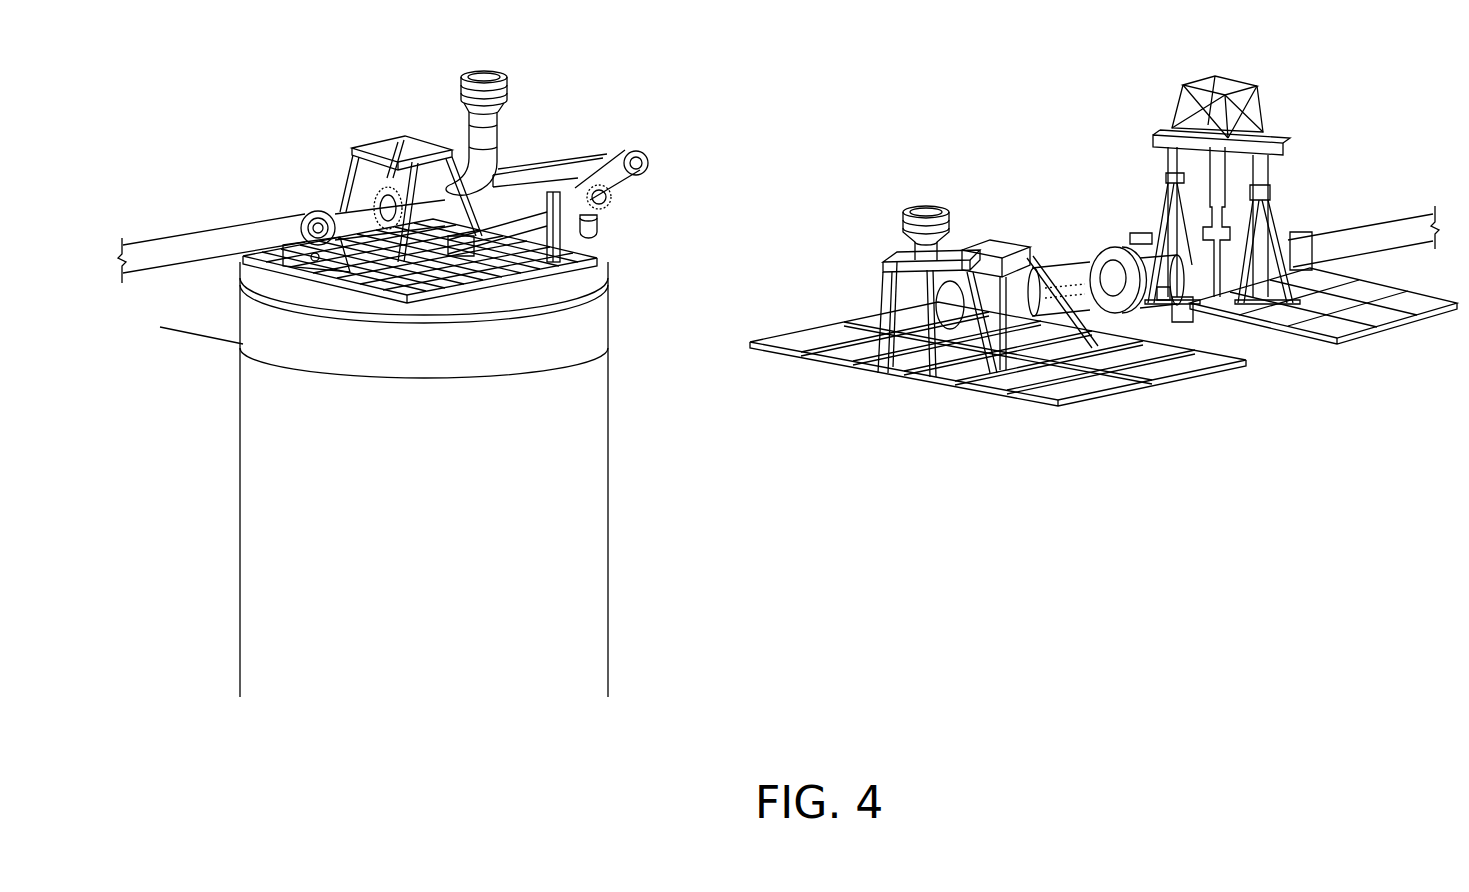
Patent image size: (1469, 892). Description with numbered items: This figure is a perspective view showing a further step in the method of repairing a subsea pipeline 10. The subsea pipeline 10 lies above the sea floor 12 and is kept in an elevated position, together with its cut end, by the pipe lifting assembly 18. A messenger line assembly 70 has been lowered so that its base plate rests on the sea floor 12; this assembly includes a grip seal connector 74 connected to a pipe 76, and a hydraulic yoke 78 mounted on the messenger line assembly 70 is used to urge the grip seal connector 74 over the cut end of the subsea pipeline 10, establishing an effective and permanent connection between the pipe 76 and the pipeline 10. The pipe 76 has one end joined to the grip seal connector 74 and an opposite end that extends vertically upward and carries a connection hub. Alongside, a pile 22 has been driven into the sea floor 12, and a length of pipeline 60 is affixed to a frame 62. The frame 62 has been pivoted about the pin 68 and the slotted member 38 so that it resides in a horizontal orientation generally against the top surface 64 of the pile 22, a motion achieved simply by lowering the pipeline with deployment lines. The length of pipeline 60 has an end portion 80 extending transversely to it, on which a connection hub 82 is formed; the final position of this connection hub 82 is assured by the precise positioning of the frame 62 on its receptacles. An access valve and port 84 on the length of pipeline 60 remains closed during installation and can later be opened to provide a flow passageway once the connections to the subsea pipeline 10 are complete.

The subsea pipeline 10 is at (1332, 238).
The sea floor 12 is at (718, 342).
The pipe lifting assembly 18 is at (1288, 330).
The pile 22 is at (611, 486).
The slotted member 38 is at (608, 206).
The length of pipeline 60 is at (261, 230).
The frame 62 is at (245, 262).
The top surface 64 is at (610, 274).
The pin 68 is at (601, 234).
The messenger line assembly 70 is at (989, 213).
The grip seal connector 74 is at (1072, 268).
The pipe 76 is at (949, 325).
The hydraulic yoke 78 is at (952, 221).
The end portion 80 is at (499, 131).
The connection hub 82 is at (508, 78).
The access valve and port 84 is at (410, 137).